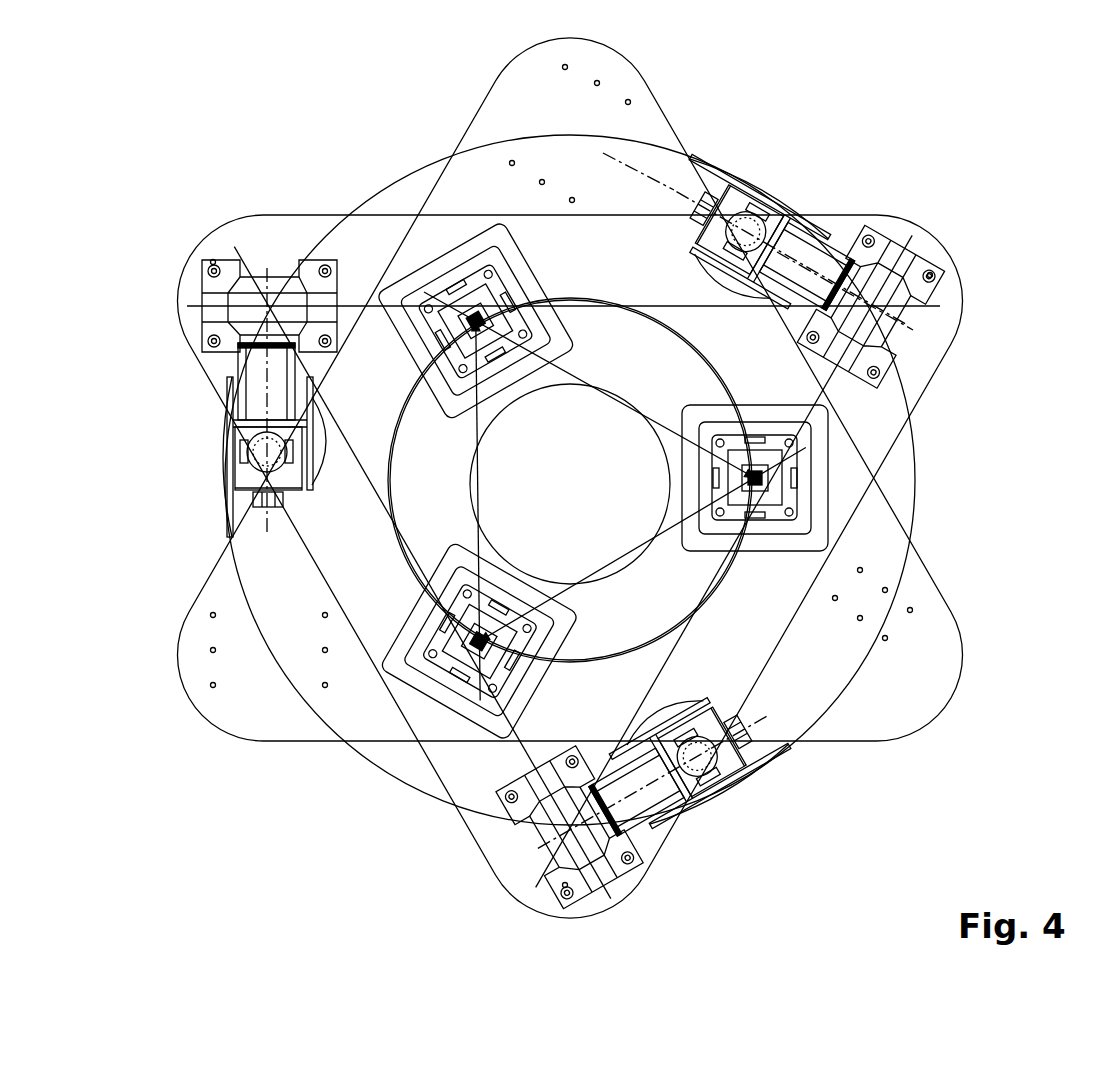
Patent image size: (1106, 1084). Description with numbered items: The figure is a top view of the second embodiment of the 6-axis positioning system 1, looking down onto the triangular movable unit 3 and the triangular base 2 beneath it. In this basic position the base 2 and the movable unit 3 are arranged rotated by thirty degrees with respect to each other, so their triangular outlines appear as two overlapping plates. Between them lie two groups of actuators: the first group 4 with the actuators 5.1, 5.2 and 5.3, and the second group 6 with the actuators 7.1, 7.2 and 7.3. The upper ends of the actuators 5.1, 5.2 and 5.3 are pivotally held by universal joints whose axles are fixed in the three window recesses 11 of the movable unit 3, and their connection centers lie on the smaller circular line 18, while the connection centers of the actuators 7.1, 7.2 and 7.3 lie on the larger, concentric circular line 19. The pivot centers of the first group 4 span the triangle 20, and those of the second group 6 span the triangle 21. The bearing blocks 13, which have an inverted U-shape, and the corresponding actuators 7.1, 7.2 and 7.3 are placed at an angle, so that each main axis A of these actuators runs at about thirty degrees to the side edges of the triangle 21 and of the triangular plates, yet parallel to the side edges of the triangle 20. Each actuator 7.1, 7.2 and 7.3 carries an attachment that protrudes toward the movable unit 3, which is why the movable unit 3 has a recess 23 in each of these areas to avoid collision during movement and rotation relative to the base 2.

The 6-axis positioning system 1 is at (957, 130).
The base 2 is at (500, 850).
The movable unit 3 is at (930, 625).
The first group 4 is at (397, 617).
The actuator 5.1 is at (497, 305).
The actuator 5.2 is at (788, 490).
The actuator 5.3 is at (457, 663).
The second group 6 is at (848, 246).
The actuator 7.1 is at (788, 207).
The actuator 7.2 is at (735, 778).
The actuator 7.3 is at (230, 462).
The window recess 11 is at (488, 260).
The bearing block 13 is at (210, 293).
The circular line 18 is at (600, 292).
The circular line 19 is at (418, 160).
The triangle 20 is at (612, 568).
The triangle 21 is at (700, 590).
The recess 23 is at (318, 457).
The main axis A is at (270, 372).